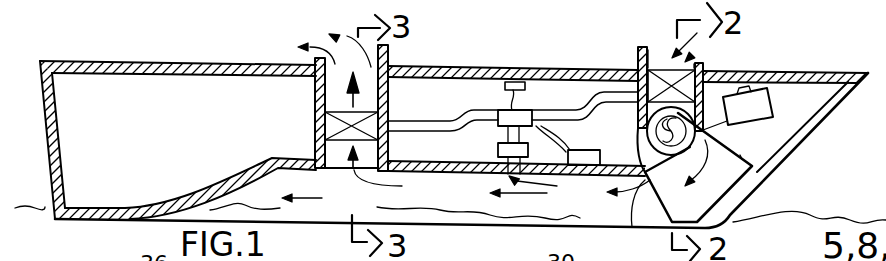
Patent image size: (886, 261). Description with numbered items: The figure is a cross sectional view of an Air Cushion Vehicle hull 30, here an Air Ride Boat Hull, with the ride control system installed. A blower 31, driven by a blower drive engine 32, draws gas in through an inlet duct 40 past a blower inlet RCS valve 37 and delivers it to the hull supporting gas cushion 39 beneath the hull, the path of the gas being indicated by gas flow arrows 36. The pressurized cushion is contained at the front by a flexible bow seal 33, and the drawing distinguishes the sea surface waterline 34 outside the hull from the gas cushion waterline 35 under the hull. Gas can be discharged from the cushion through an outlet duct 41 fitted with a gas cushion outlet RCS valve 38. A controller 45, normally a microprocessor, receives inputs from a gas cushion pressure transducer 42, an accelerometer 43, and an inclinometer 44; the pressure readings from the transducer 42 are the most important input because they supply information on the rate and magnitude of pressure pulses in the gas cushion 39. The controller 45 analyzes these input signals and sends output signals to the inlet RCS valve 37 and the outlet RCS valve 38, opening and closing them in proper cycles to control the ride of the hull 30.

The Air Cushion Vehicle hull 30 is at (193, 61).
The blower 31 is at (640, 139).
The blower drive engine 32 is at (768, 100).
The flexible bow seal 33 is at (732, 190).
The sea surface waterline 34 is at (32, 205).
The gas cushion waterline 35 is at (538, 217).
The gas flow arrows 36 is at (333, 64).
The blower inlet RCS valve 37 is at (638, 58).
The gas cushion outlet RCS valve 38 is at (330, 128).
The hull supporting gas cushion 39 is at (455, 195).
The inlet duct 40 is at (663, 60).
The outlet duct 41 is at (372, 66).
The gas cushion pressure transducer 42 is at (498, 148).
The accelerometer 43 is at (583, 151).
The inclinometer 44 is at (513, 80).
The controller 45 is at (510, 113).